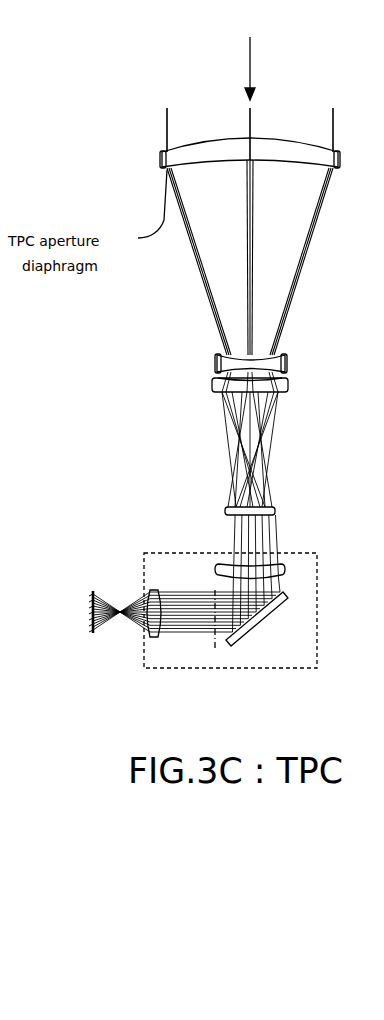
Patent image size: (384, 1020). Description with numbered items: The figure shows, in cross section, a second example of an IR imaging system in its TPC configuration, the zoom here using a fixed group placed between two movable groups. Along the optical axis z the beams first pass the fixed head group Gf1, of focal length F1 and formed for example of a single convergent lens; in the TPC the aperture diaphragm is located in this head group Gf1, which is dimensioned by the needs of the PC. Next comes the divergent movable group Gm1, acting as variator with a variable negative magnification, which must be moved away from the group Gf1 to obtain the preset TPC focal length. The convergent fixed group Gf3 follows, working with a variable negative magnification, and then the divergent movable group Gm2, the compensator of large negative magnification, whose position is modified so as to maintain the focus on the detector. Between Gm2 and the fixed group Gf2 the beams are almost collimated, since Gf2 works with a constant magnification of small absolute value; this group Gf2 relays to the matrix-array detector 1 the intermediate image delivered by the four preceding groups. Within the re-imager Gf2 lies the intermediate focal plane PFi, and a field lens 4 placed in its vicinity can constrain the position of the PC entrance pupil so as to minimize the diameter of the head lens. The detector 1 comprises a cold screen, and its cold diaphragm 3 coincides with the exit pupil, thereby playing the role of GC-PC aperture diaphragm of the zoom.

The optical axis z is at (256, 68).
The fixed group Gf1 is at (230, 155).
The divergent movable group Gm1 is at (223, 363).
The convergent fixed group Gf3 is at (271, 387).
The divergent movable group Gm2 is at (225, 512).
The fixed group Gf2 is at (284, 592).
The field lens 4 is at (285, 588).
The intermediate focal plane PFi is at (215, 650).
The cold diaphragm 3 is at (138, 603).
The matrix-array detector 1 is at (88, 628).